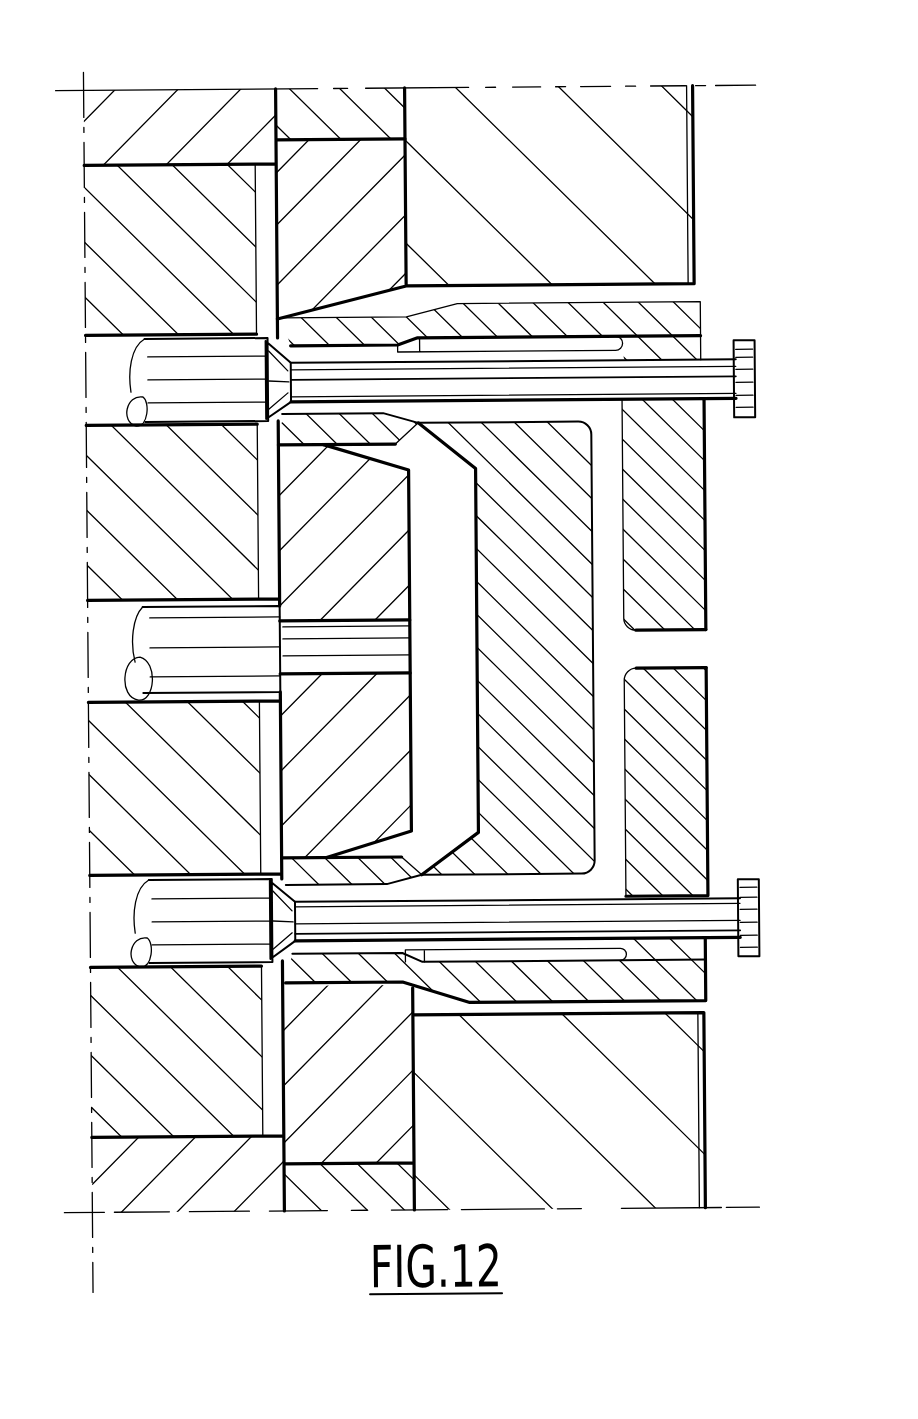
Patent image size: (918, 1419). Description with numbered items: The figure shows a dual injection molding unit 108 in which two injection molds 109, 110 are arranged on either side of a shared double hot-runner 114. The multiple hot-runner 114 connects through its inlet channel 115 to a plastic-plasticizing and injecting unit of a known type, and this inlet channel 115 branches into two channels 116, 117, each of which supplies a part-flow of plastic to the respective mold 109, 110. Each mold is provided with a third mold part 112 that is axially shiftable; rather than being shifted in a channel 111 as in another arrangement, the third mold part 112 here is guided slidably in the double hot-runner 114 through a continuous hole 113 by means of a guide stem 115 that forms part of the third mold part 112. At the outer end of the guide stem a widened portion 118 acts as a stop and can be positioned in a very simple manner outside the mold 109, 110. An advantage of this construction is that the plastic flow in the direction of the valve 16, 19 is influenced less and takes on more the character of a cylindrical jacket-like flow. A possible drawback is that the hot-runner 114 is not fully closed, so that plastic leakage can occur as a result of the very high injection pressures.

The dual injection molding unit 108 is at (482, 70).
The injection mold 109 is at (215, 68).
The injection mold 110 is at (160, 1193).
The valve 16 is at (280, 337).
The valve 19 is at (262, 388).
The third mold part 112 is at (143, 370).
The continuous hole 113 is at (663, 357).
The widened portion 118 is at (753, 383).
The guide stem 115 is at (487, 372).
The channel 111 is at (568, 340).
The channel 116 is at (610, 525).
The double hot-runner 114 is at (673, 468).
The channel 117 is at (615, 722).